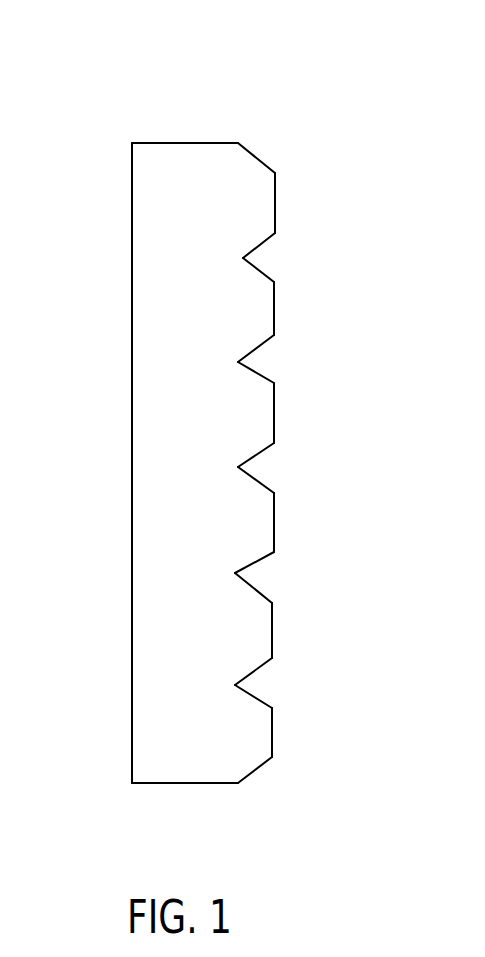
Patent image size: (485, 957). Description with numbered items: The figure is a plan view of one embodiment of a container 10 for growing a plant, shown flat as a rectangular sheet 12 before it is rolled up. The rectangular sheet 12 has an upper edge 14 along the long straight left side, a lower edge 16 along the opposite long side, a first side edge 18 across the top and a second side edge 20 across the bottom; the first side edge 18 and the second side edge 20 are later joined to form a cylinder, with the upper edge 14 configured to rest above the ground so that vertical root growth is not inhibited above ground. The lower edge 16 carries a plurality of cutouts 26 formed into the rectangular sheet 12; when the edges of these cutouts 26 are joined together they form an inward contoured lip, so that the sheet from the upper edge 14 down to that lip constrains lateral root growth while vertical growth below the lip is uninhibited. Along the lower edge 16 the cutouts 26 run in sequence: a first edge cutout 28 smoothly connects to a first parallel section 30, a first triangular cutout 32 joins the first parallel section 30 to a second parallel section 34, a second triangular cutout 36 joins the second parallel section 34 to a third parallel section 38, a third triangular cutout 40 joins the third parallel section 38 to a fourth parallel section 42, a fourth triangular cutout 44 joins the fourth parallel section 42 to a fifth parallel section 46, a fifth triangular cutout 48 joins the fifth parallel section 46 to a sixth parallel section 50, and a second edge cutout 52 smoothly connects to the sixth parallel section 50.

The container 10 is at (205, 427).
The rectangular sheet 12 is at (214, 465).
The upper edge 14 is at (132, 458).
The lower edge 16 is at (297, 450).
The first side edge 18 is at (188, 142).
The second side edge 20 is at (230, 784).
The cutouts 26 is at (295, 631).
The first edge cutout 28 is at (263, 163).
The first parallel section 30 is at (277, 205).
The first triangular cutout 32 is at (266, 240).
The second parallel section 34 is at (277, 313).
The second triangular cutout 36 is at (265, 343).
The third parallel section 38 is at (277, 420).
The third triangular cutout 40 is at (265, 450).
The fourth parallel section 42 is at (277, 526).
The fourth triangular cutout 44 is at (265, 556).
The fifth parallel section 46 is at (275, 633).
The fifth triangular cutout 48 is at (263, 661).
The sixth parallel section 50 is at (275, 741).
The second edge cutout 52 is at (264, 764).